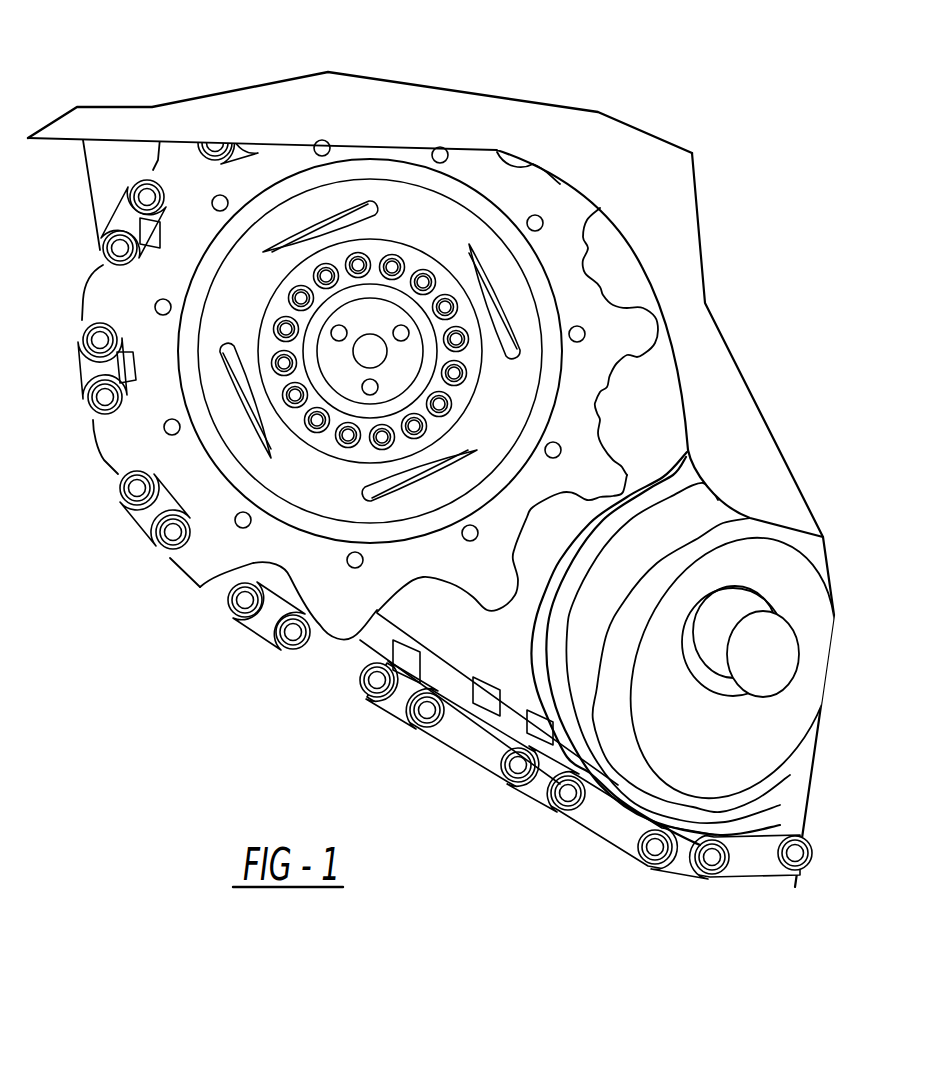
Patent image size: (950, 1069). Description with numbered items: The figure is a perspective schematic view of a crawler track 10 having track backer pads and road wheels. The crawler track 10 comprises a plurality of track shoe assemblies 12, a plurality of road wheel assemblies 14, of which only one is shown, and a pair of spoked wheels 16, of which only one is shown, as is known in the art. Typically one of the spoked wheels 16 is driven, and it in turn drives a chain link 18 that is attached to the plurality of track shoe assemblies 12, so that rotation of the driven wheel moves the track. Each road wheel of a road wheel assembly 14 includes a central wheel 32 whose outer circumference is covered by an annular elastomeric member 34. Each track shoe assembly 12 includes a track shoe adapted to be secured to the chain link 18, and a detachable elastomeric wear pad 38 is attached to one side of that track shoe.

The crawler track 10 is at (160, 605).
The track shoe assembly 12 is at (422, 495).
The road wheel assembly 14 is at (720, 752).
The spoked wheel 16 is at (413, 223).
The chain link 18 is at (93, 370).
The central wheel 32 is at (665, 752).
The annular elastomeric member 34 is at (678, 523).
The detachable elastomeric wear pad 38 is at (480, 703).